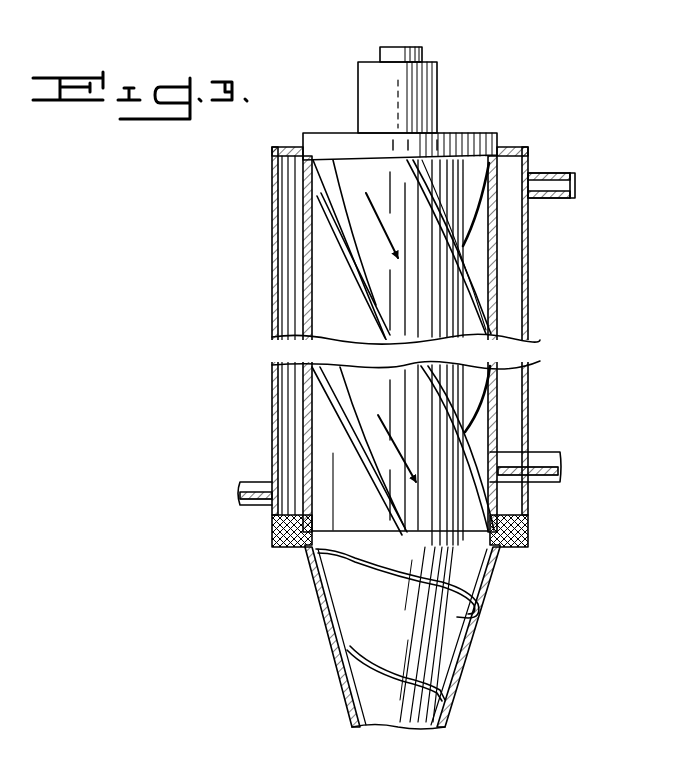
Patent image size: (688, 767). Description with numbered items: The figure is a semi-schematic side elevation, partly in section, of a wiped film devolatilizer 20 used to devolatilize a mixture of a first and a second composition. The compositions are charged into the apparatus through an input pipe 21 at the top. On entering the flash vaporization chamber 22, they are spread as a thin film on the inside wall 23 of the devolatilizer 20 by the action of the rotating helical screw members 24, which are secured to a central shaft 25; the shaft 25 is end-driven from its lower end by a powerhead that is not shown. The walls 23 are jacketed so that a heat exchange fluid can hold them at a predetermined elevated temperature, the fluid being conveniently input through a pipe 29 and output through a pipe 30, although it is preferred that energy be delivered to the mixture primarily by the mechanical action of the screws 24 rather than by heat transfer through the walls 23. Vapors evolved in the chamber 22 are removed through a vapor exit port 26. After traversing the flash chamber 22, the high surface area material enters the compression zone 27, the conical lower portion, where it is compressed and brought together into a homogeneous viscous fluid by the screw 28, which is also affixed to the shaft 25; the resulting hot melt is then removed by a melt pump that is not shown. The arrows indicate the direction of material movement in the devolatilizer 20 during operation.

The devolatilizer 20 is at (300, 128).
The input pipe 21 is at (400, 46).
The flash vaporization chamber 22 is at (478, 222).
The inside wall 23 is at (484, 257).
The helical screw members 24 is at (483, 312).
The central shaft 25 is at (433, 330).
The vapor exit port 26 is at (561, 468).
The compression zone 27 is at (467, 565).
The screw 28 is at (447, 696).
The pipe 29 is at (250, 480).
The pipe 30 is at (566, 173).